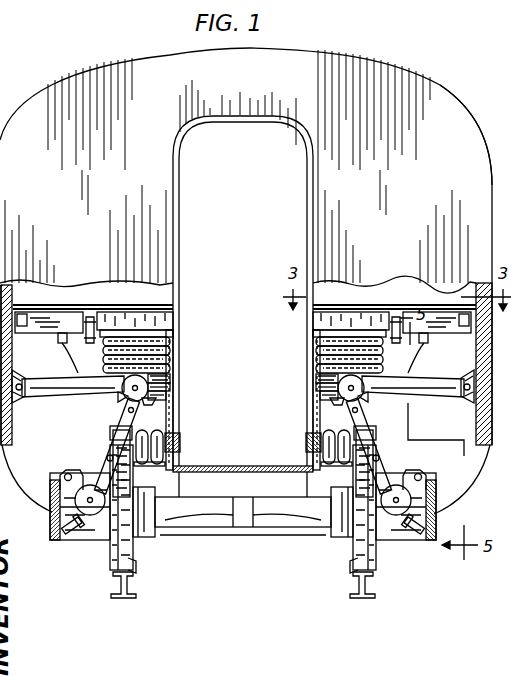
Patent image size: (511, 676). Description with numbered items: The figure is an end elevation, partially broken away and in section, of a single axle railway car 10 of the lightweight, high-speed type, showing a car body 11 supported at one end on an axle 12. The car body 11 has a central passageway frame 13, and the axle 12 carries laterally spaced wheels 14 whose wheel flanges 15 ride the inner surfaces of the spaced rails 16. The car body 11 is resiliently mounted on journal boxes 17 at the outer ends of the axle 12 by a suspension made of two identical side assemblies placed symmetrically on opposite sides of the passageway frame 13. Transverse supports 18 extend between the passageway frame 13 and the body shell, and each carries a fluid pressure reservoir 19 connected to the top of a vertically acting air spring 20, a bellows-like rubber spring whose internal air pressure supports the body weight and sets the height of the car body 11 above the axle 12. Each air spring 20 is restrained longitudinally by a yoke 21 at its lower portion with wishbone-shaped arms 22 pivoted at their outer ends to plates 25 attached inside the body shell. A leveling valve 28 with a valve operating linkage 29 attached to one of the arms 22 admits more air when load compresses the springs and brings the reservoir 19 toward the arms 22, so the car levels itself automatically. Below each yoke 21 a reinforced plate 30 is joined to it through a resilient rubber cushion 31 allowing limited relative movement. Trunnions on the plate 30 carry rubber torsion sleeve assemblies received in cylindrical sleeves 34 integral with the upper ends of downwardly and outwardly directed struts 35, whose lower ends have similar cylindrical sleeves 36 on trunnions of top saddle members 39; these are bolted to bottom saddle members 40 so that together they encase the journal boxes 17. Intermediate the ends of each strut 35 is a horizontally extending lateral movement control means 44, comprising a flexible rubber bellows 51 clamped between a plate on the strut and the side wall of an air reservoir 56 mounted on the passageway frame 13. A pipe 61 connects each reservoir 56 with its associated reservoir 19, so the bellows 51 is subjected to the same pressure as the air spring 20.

The single axle railway car 10 is at (415, 72).
The car body 11 is at (470, 133).
The axle 12 is at (197, 508).
The passageway frame 13 is at (180, 227).
The wheels 14 is at (112, 554).
The wheel flanges 15 is at (134, 562).
The rails 16 is at (119, 598).
The journal boxes 17 is at (77, 541).
The transverse supports 18 is at (56, 313).
The fluid pressure reservoirs 19 is at (117, 316).
The air springs 20 is at (168, 346).
The yokes 21 is at (169, 384).
The restraining arms 22 is at (59, 389).
The plates 25 is at (20, 403).
The leveling valve 28 is at (404, 302).
The valve operating linkage 29 is at (61, 353).
The reinforced plate 30 is at (162, 399).
The resilient rubber cushion 31 is at (171, 389).
The cylindrical sleeves 34 is at (127, 391).
The struts 35 is at (114, 423).
The cylindrical sleeves 36 is at (88, 484).
The top saddle members 39 is at (71, 494).
The bottom saddle members 40 is at (90, 541).
The lateral movement control means 44 is at (142, 435).
The flexible rubber bellows 51 is at (155, 467).
The air reservoir 56 is at (180, 447).
The pipe 61 is at (173, 364).